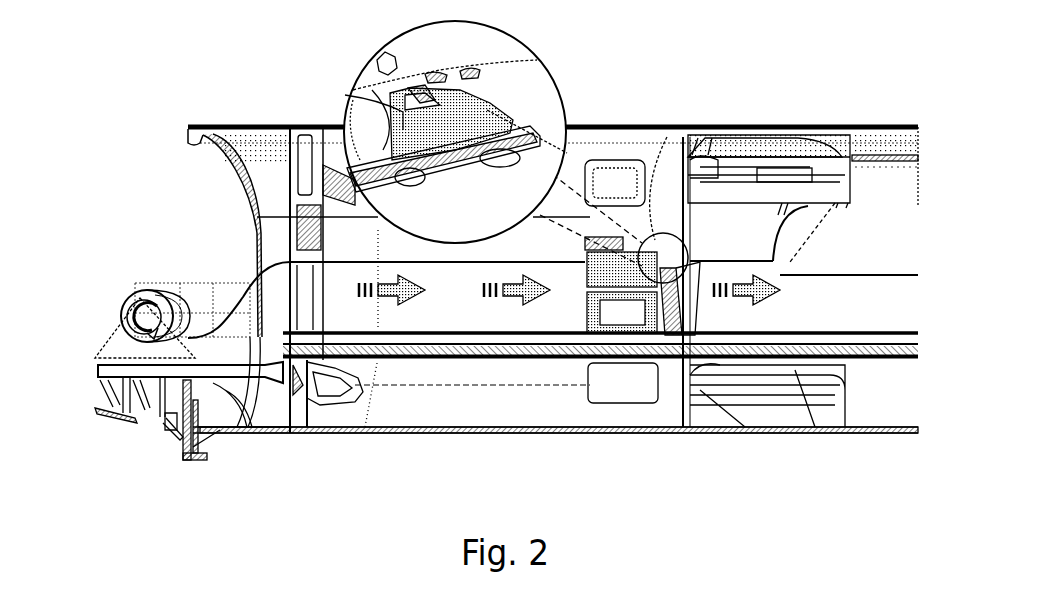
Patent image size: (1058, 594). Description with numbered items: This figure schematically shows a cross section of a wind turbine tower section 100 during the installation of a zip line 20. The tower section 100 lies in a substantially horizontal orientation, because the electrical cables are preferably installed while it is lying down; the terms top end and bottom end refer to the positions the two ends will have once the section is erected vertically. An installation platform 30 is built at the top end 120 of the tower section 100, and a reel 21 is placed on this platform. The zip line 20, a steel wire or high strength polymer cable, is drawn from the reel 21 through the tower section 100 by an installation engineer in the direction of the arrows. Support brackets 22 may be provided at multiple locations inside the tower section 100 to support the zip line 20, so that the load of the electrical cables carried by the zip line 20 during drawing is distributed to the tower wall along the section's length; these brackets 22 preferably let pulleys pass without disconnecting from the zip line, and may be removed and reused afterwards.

The wind turbine tower section 100 is at (793, 126).
The top end 120 is at (200, 122).
The zip line 20 is at (383, 150).
The reel 21 is at (247, 242).
The support bracket 22 is at (457, 110).
The installation platform 30 is at (97, 367).